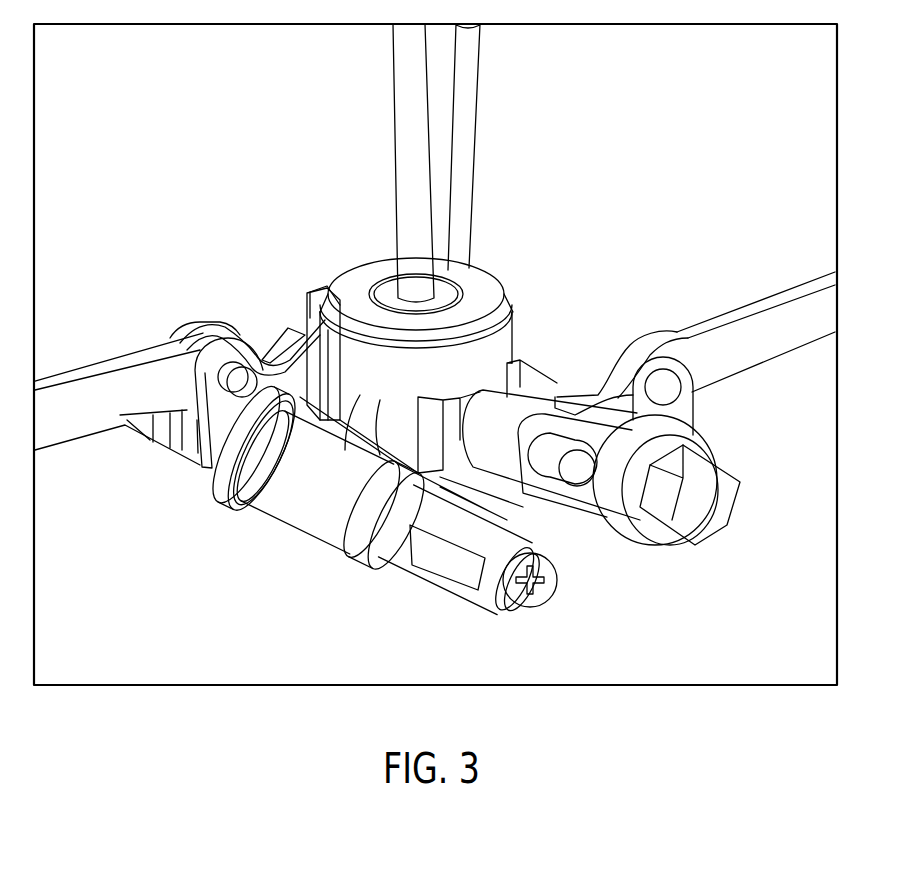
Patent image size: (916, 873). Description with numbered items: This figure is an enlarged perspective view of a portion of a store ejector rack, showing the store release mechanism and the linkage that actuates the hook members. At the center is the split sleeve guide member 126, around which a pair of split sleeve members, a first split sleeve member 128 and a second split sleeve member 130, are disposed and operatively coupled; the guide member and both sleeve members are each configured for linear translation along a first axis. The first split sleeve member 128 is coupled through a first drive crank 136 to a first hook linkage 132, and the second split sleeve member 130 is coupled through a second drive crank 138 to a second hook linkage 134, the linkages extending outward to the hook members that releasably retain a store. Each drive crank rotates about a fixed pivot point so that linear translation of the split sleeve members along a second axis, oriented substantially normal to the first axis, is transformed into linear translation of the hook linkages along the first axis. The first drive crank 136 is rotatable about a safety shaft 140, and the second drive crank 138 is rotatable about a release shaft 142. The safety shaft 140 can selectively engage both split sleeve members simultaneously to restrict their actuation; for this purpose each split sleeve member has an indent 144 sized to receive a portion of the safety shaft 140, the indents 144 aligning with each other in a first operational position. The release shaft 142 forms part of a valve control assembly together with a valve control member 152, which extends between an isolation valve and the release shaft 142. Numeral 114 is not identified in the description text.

The shaft 114 is at (391, 88).
The valve control member 152 is at (480, 104).
The split sleeve guide member 126 is at (476, 287).
The first split sleeve member 128 is at (328, 340).
The second split sleeve member 130 is at (515, 345).
The first hook linkage 132 is at (78, 310).
The second hook linkage 134 is at (782, 237).
The first drive crank 136 is at (217, 408).
The second drive crank 138 is at (680, 411).
The safety shaft 140 is at (325, 505).
The release shaft 142 is at (718, 507).
The indent 144 is at (372, 460).